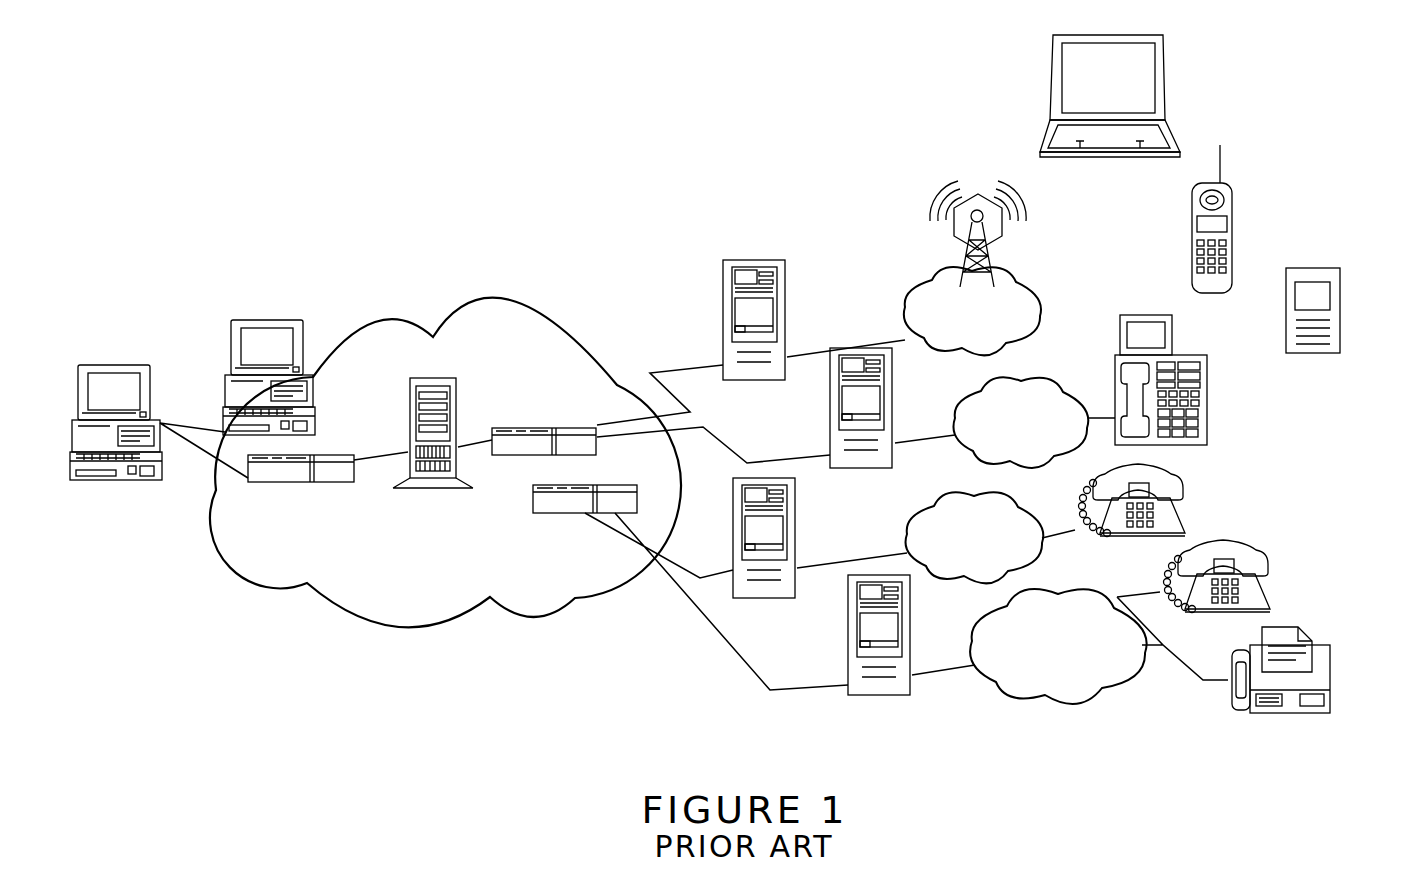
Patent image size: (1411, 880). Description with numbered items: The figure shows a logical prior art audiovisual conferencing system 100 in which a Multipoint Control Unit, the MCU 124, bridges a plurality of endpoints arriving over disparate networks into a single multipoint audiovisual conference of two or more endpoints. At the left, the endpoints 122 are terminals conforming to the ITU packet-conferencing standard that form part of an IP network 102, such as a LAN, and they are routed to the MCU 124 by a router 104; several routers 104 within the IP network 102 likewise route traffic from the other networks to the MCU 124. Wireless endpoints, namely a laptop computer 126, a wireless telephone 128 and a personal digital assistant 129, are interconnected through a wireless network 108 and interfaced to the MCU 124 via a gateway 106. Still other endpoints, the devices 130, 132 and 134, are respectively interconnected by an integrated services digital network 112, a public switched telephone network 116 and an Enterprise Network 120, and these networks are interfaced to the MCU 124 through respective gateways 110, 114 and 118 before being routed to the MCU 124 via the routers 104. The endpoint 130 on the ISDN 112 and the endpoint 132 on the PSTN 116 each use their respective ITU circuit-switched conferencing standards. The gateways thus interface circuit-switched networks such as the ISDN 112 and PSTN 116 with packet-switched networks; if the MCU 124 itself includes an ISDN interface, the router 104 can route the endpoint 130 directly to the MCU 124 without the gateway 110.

The audiovisual conferencing system 100 is at (805, 138).
The IP network 102 is at (283, 587).
The router 104 is at (252, 482).
The gateway 106 is at (787, 290).
The wireless network 108 is at (1012, 263).
The gateway 110 is at (829, 400).
The integrated services digital network (ISDN) 112 is at (1056, 374).
The gateway 114 is at (797, 532).
The public switched telephone network (PSTN) 116 is at (928, 512).
The gateway 118 is at (846, 644).
The Enterprise Network 120 is at (1092, 697).
The endpoints 122 is at (105, 363).
The Multipoint Control Unit (MCU) 124 is at (440, 489).
The laptop computer 126 is at (1165, 75).
The wireless telephone 128 is at (1233, 225).
The personal digital assistant (PDA) 129 is at (1342, 312).
The endpoint device 130 is at (1208, 407).
The endpoint device 132 is at (1182, 480).
The endpoint devices 134 is at (1265, 555).